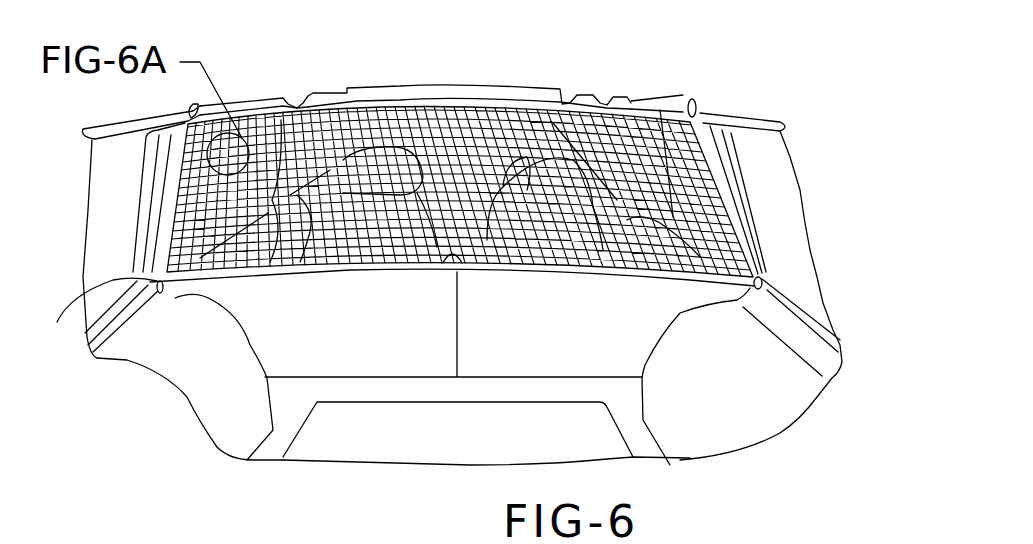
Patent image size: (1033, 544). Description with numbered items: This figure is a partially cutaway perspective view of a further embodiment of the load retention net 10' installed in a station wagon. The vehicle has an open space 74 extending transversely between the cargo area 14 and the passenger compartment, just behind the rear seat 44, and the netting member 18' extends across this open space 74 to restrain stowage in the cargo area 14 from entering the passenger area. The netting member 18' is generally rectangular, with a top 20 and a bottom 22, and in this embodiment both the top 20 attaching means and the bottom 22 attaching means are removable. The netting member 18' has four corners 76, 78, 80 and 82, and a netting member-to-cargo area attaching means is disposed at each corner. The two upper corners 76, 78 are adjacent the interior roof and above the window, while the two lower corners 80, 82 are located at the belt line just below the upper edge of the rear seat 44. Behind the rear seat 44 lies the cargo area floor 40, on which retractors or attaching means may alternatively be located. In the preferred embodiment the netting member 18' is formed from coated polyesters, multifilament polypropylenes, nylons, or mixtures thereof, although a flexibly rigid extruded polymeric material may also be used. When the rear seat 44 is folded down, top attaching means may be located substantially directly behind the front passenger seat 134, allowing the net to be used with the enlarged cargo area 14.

The load retention net 10' is at (106, 232).
The front passenger seat 134 is at (357, 177).
The open space 74 is at (437, 97).
The netting member 18' is at (460, 159).
The top 20 is at (623, 110).
The corner 78 is at (694, 110).
The corner 76 is at (194, 116).
The corner 82 is at (118, 340).
The corner 80 is at (758, 278).
The bottom 22 is at (527, 270).
The rear seat 44 is at (347, 360).
The cargo area floor 40 is at (557, 451).
The cargo area 14 is at (321, 442).